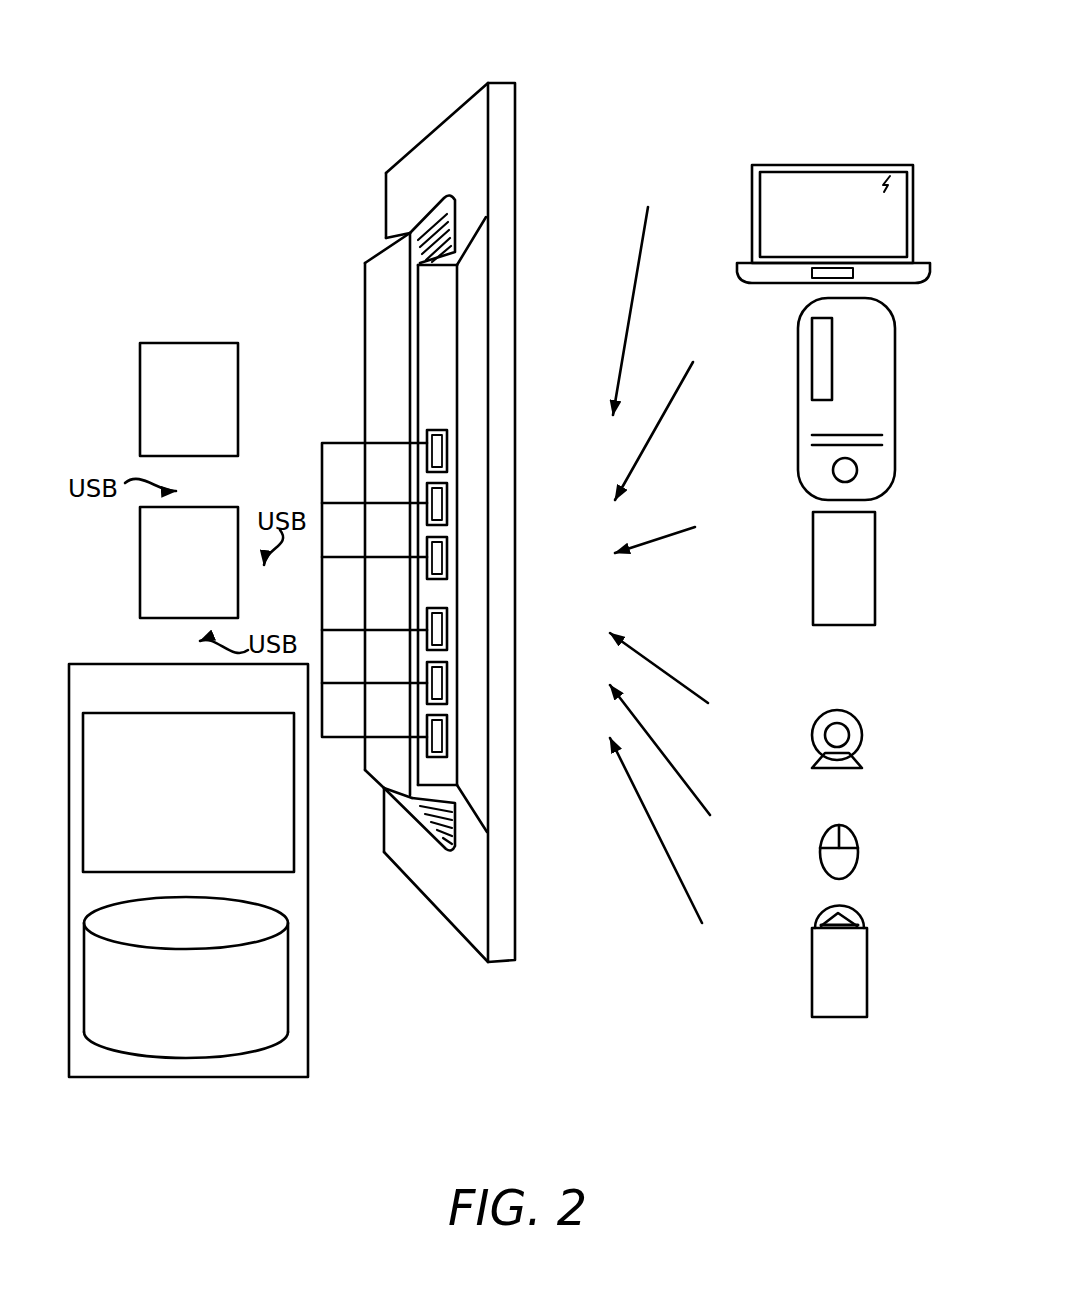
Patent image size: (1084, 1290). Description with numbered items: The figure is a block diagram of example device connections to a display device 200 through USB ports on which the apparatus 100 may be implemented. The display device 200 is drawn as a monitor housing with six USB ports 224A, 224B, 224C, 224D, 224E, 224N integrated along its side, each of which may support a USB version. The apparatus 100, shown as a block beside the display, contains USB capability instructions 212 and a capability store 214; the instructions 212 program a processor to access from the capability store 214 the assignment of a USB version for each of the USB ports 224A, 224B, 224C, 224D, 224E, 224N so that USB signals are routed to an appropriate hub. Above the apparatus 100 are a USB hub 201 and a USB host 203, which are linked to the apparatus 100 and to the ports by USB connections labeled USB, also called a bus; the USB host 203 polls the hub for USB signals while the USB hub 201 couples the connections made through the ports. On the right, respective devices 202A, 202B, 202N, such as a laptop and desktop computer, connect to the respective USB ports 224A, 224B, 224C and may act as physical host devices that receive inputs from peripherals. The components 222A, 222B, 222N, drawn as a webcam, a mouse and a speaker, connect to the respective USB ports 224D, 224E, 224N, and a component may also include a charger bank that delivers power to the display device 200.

The display device 200 is at (503, 76).
The apparatus 100 is at (167, 701).
The USB hub 201 is at (168, 606).
The USB host 203 is at (168, 442).
The USB capability instructions 212 is at (167, 850).
The capability store 214 is at (165, 1047).
The USB port 224A is at (457, 445).
The USB port 224B is at (457, 505).
The USB port 224C is at (457, 560).
The USB port 224D is at (457, 632).
The USB port 224E is at (457, 678).
The USB port 224N is at (457, 735).
The device 202A is at (753, 227).
The device 202B is at (796, 398).
The device 202N is at (813, 572).
The component 222A is at (813, 745).
The component 222B is at (820, 856).
The component 222N is at (811, 964).